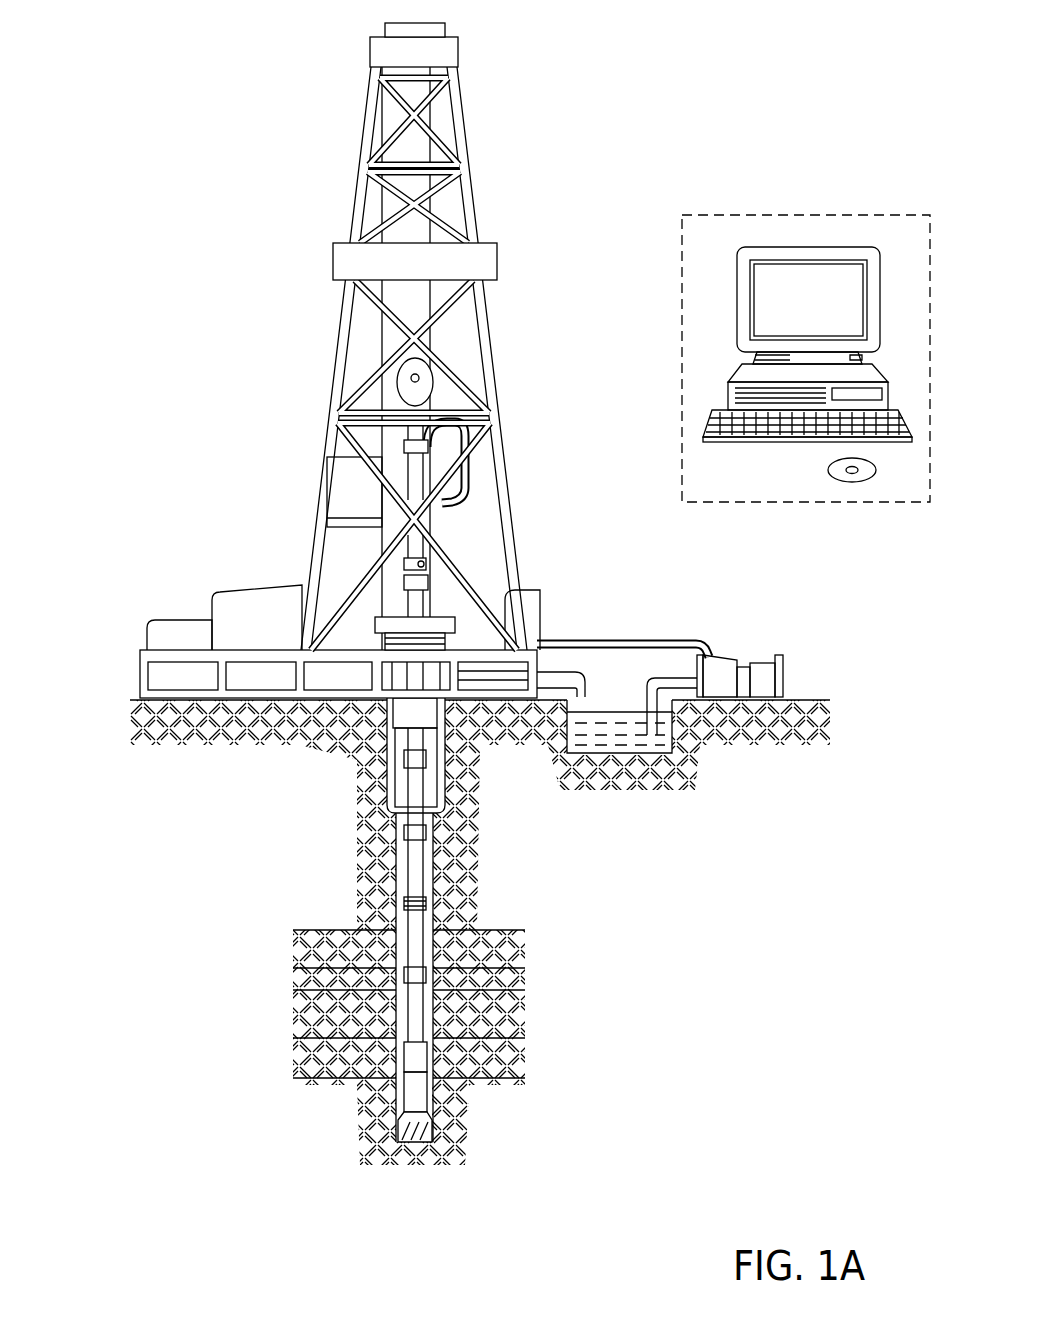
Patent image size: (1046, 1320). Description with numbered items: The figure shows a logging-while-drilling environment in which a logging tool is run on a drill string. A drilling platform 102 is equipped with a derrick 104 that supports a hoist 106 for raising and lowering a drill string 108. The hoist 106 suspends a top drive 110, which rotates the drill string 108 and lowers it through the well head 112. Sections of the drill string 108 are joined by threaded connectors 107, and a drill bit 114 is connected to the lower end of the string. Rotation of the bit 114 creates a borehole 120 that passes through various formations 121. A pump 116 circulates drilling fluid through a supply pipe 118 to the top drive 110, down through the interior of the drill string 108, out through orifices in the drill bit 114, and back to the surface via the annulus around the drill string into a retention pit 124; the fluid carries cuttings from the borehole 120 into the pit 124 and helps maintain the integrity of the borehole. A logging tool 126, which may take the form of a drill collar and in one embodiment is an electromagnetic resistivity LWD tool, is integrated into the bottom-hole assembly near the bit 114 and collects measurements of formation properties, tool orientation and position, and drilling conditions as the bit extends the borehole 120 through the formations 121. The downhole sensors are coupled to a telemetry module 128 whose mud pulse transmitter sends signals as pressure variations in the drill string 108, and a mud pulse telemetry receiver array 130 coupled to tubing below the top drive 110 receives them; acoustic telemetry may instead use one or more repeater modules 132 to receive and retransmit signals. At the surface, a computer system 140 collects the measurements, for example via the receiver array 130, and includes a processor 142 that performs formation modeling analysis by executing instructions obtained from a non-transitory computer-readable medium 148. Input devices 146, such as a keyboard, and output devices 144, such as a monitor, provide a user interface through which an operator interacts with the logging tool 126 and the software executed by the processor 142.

The drilling platform 102 is at (142, 665).
The derrick 104 is at (473, 202).
The hoist 106 is at (425, 378).
The threaded connectors 107 is at (406, 832).
The drill string 108 is at (425, 883).
The top drive 110 is at (445, 472).
The well head 112 is at (430, 617).
The drill bit 114 is at (440, 1128).
The pump 116 is at (715, 677).
The supply pipe 118 is at (630, 640).
The borehole 120 is at (437, 888).
The formations 121 is at (557, 930).
The retention pit 124 is at (578, 748).
The logging tool 126 is at (405, 1095).
The telemetry module 128 is at (406, 1058).
The mud pulse telemetry receiver array 130 is at (682, 468).
The repeater modules 132 is at (405, 903).
The computer system 140 is at (779, 347).
The processor 142 is at (740, 365).
The output device 144 is at (777, 248).
The input device 146 is at (716, 414).
The non-transitory computer-readable medium 148 is at (848, 482).